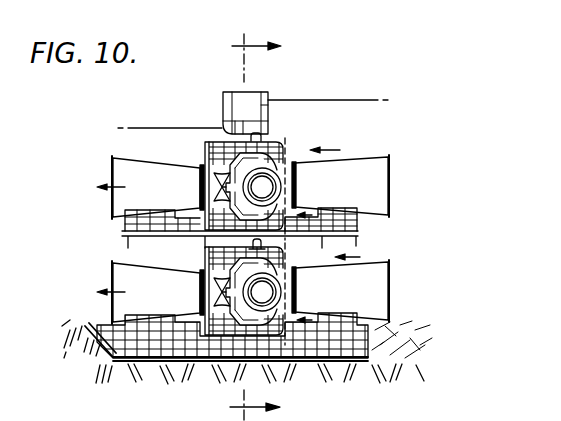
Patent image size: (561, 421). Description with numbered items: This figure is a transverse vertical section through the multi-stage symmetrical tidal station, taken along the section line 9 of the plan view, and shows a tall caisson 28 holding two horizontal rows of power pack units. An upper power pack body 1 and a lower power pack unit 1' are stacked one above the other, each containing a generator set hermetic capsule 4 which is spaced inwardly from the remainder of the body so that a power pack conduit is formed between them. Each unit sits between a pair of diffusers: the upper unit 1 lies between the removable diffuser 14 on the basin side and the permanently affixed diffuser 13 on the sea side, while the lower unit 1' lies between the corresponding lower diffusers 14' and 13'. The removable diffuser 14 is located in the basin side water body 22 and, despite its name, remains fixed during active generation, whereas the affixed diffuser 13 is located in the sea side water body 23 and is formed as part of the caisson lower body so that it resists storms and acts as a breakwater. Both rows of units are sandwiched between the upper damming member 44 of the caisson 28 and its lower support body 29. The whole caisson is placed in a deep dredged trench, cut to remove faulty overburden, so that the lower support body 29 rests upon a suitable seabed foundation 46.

The power pack body 1 is at (260, 179).
The lower power pack unit 1' is at (282, 294).
The generator set hermetic capsule 4 is at (283, 190).
The section line 9 is at (266, 227).
The permanently affixed diffuser 13 is at (340, 182).
The lower sea side diffuser 13' is at (340, 291).
The removable diffuser 14 is at (150, 187).
The lower basin side diffuser 14' is at (150, 292).
The basin side water body 22 is at (176, 120).
The sea side water body 23 is at (334, 92).
The caisson 28 is at (256, 115).
The lower support body 29 is at (335, 362).
The upper damming member 44 is at (260, 92).
The seabed foundation 46 is at (155, 370).